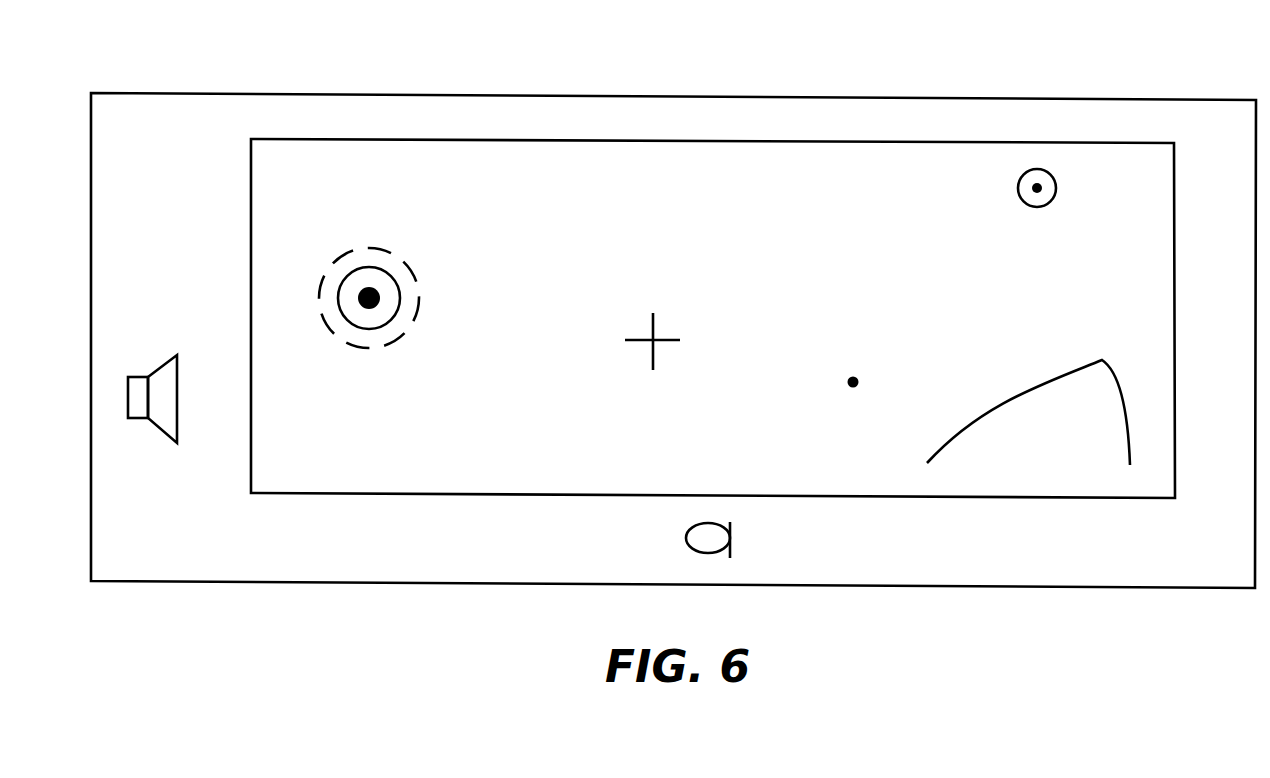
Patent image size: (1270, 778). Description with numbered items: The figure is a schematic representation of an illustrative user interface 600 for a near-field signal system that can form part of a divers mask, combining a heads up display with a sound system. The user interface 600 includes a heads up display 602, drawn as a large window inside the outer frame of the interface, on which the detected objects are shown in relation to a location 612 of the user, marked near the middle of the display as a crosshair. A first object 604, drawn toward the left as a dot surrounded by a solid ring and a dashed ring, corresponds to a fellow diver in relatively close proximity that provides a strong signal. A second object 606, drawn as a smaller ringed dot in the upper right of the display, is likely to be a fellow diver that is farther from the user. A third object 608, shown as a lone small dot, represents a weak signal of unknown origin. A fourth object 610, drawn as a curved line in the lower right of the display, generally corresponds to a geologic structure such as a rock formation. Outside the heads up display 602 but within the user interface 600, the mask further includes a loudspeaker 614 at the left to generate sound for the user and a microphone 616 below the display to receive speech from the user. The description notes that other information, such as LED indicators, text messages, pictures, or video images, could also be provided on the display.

The user interface 600 is at (1099, 80).
The heads up display 602 is at (737, 196).
The first object 604 is at (397, 258).
The second object 606 is at (1057, 188).
The third object 608 is at (857, 375).
The fourth object 610 is at (1052, 378).
The location of the user 612 is at (660, 335).
The loudspeaker 614 is at (160, 363).
The microphone 616 is at (692, 550).